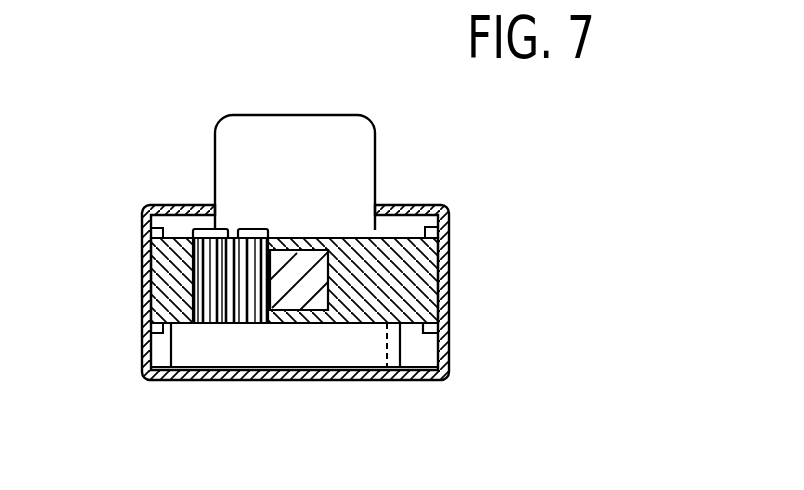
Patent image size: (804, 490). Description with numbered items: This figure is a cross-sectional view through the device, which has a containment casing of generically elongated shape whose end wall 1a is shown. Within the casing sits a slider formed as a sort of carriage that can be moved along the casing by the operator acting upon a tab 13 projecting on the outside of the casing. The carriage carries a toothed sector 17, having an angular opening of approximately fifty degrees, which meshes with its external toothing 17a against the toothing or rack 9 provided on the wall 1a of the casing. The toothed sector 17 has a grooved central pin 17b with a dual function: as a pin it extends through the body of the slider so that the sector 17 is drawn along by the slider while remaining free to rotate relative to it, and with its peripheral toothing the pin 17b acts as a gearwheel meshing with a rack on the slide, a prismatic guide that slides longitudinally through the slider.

The end wall 1a is at (450, 351).
The toothing or rack 9 is at (422, 352).
The tab 13 is at (221, 122).
The toothed sector 17 is at (278, 350).
The external toothing 17a is at (385, 345).
The grooved central pin 17b is at (230, 263).